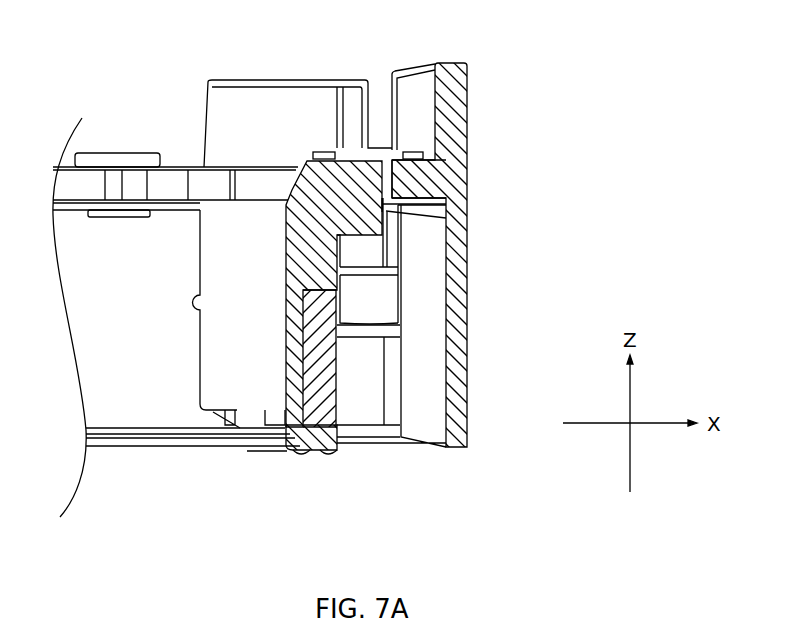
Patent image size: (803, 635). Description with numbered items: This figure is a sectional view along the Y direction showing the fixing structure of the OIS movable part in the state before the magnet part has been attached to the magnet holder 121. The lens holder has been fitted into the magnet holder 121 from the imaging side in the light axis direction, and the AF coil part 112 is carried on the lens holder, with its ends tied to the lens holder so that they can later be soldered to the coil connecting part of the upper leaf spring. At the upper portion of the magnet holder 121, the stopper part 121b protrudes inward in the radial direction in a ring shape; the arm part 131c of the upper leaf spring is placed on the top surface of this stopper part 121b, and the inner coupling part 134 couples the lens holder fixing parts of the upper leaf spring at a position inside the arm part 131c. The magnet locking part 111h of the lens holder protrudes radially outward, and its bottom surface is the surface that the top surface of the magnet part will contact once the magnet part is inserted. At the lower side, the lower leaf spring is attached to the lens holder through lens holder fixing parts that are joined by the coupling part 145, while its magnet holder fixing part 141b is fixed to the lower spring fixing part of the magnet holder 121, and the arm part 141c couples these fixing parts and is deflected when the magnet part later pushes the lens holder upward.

The inner coupling part 134 is at (326, 152).
The arm part 131c is at (418, 152).
The magnet holder 121 is at (455, 108).
The stopper part 121b is at (457, 170).
The magnet locking part 111h is at (357, 228).
The AF coil part 112 is at (333, 308).
The coupling part 145 is at (293, 455).
The arm part 141c is at (323, 455).
The magnet holder fixing part 141b is at (378, 445).